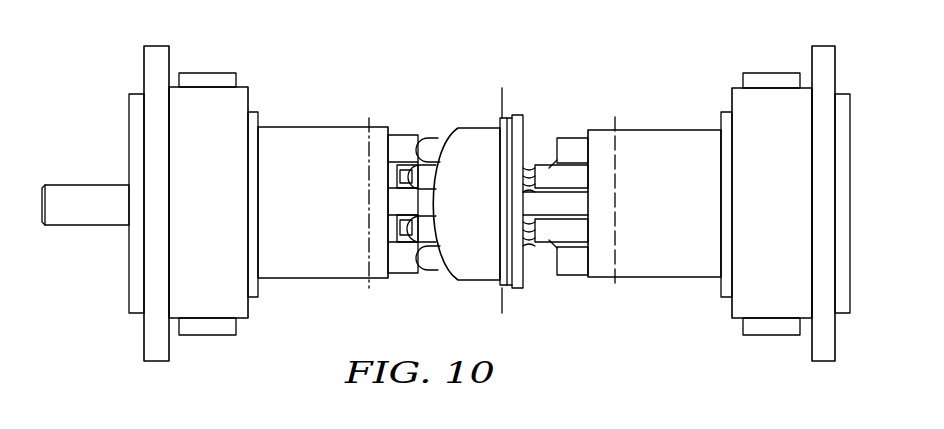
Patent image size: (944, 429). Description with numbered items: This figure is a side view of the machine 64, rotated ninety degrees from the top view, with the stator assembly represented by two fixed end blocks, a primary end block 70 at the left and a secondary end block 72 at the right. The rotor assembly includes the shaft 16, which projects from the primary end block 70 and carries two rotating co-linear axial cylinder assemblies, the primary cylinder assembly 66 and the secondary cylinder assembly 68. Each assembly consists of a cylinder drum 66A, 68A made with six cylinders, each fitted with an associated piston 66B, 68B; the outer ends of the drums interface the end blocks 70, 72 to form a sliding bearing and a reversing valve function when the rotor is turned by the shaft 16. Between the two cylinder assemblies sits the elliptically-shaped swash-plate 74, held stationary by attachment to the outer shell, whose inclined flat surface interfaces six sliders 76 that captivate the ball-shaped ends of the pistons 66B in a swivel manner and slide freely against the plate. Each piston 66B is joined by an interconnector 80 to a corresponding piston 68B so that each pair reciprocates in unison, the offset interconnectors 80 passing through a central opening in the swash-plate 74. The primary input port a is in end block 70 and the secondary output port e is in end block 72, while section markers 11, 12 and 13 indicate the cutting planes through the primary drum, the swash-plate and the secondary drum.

The machine 64 is at (108, 75).
The shaft 16 is at (97, 193).
The primary end block 70 is at (221, 210).
The primary cylinder assembly 66 is at (397, 105).
The cylinder drum 66A is at (338, 207).
The pistons 66B is at (414, 148).
The swash-plate 74 is at (480, 208).
The sliders 76 is at (438, 143).
The interconnectors 80 is at (528, 170).
The secondary cylinder assembly 68 is at (698, 113).
The cylinder drum 68A is at (682, 208).
The pistons 68B is at (568, 256).
The secondary end block 72 is at (783, 210).
The section line 11- 11 is at (369, 118).
The section line 12- 12 is at (502, 88).
The section line 13- 13 is at (615, 117).